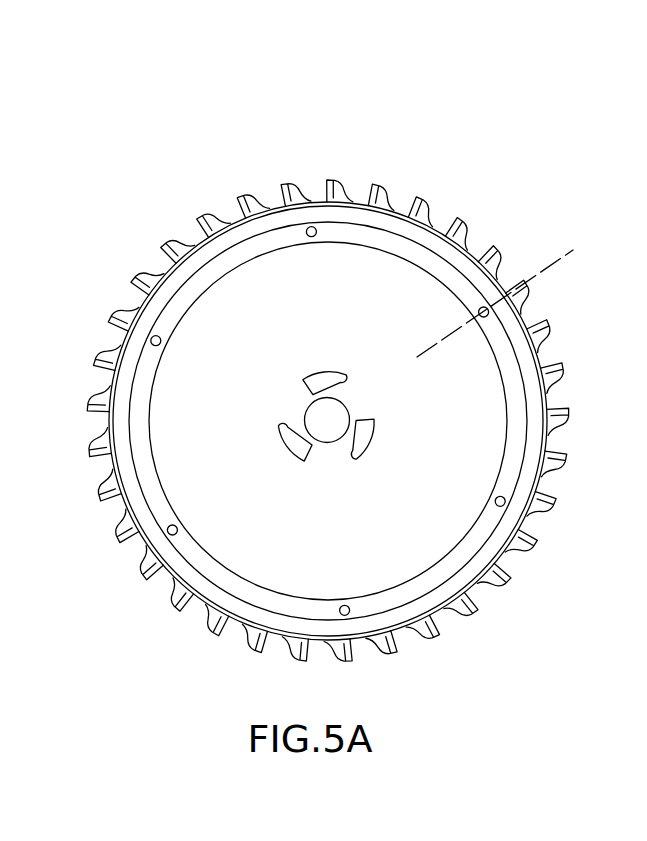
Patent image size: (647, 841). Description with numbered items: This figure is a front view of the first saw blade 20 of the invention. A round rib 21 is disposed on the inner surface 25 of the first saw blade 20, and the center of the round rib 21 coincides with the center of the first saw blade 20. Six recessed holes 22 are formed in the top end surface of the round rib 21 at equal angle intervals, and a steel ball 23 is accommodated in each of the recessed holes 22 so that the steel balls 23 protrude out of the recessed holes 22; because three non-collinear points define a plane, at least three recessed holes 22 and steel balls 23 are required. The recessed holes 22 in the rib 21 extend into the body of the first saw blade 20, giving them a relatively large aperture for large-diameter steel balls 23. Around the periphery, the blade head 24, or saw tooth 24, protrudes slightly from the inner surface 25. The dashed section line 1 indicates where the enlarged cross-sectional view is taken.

The first saw blade 20 is at (417, 170).
The round rib 21 is at (485, 520).
The recessed holes 22 is at (497, 495).
The steel ball 23 is at (312, 226).
The blade head 24 is at (497, 298).
The inner surface 25 is at (283, 574).
The section line 1- 1 is at (416, 338).